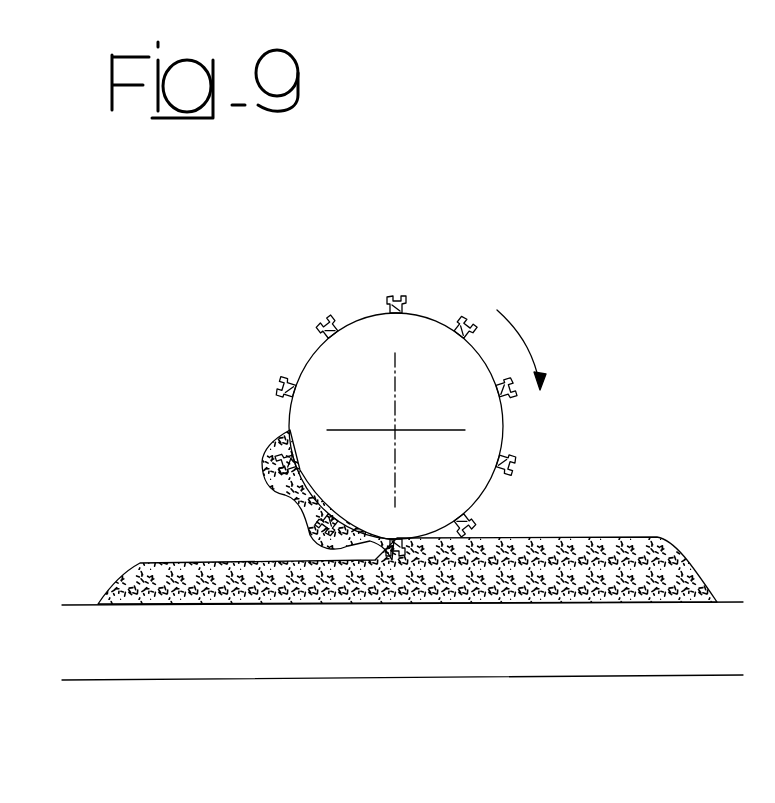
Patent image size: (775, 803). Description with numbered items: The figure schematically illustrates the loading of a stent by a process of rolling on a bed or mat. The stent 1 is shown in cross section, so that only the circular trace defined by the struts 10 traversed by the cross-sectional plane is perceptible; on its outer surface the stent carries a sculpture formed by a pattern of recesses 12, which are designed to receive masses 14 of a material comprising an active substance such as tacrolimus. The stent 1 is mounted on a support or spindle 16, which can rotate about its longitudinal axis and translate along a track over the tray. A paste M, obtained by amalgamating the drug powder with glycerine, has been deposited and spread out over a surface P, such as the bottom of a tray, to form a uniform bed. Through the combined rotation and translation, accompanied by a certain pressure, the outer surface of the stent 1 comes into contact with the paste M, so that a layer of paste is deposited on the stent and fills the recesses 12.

The stent 1 is at (530, 470).
The struts 10 is at (393, 314).
The recesses 12 is at (472, 320).
The masses of material comprising an active substance 14 is at (306, 540).
The support or spindle 16 is at (326, 457).
The paste M is at (677, 550).
The surface P is at (548, 655).